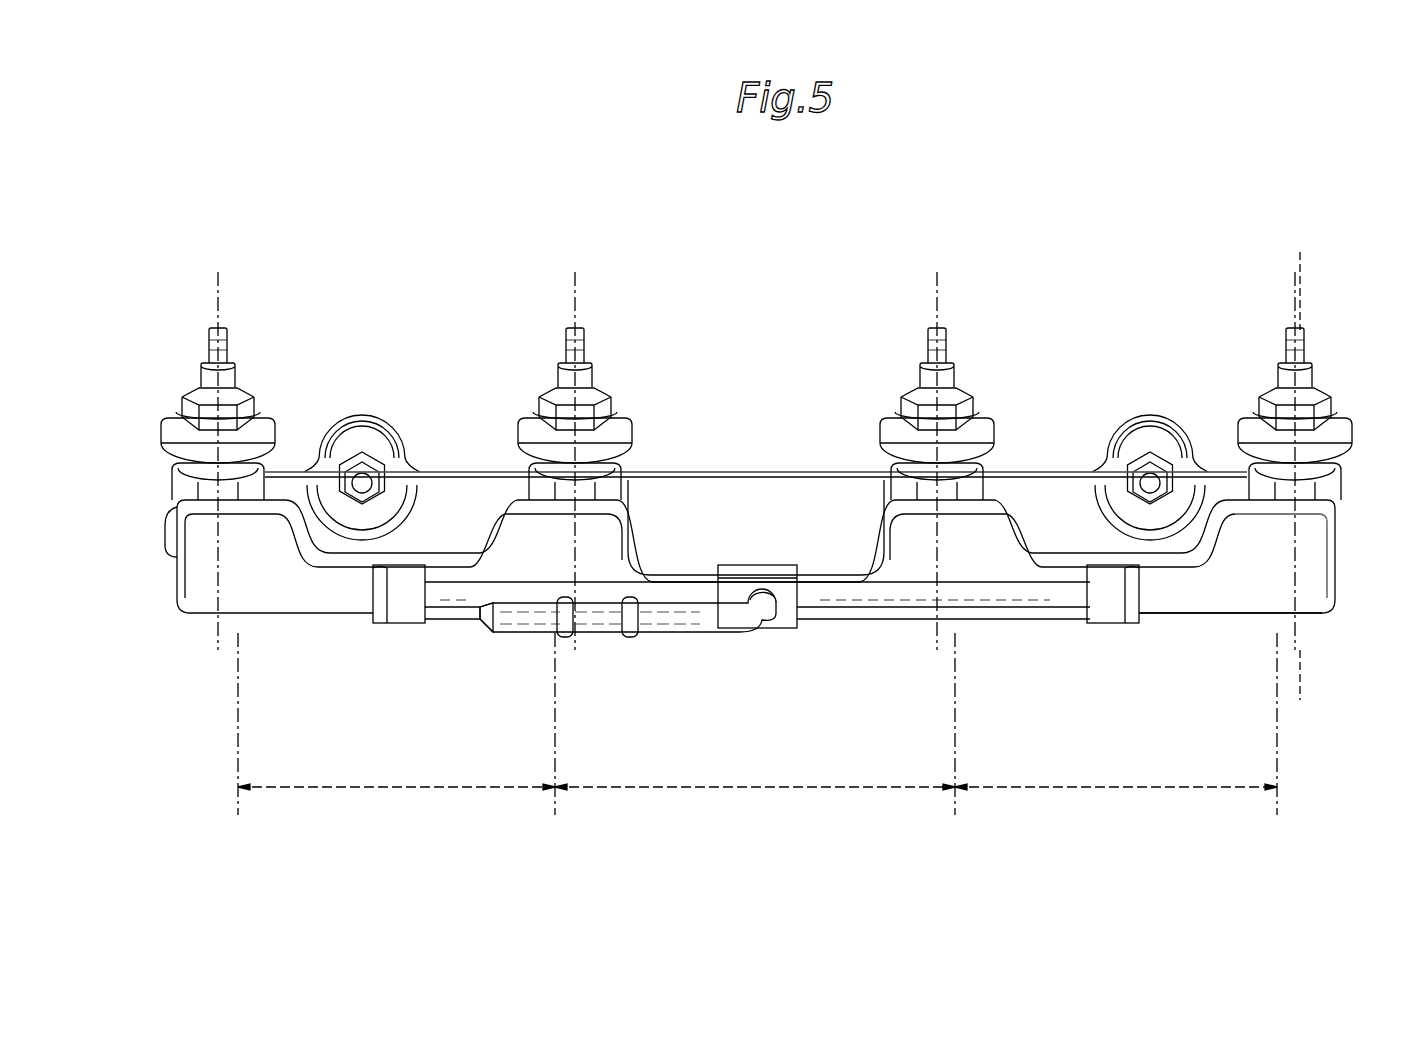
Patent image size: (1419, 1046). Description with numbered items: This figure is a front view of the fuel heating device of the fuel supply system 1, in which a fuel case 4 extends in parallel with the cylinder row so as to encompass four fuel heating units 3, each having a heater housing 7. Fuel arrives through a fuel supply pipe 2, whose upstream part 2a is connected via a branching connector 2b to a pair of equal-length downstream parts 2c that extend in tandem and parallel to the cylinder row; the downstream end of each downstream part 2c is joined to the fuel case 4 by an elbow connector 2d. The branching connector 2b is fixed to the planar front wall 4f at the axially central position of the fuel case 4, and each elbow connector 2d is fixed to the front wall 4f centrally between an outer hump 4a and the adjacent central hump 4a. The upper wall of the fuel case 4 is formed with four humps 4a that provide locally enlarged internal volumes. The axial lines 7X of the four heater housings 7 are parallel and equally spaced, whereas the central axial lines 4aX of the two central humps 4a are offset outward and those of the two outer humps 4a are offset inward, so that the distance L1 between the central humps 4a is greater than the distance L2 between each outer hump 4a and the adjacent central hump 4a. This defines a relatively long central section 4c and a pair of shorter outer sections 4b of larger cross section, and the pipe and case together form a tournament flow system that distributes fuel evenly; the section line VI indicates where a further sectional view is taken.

The fuel supply system 1 is at (1108, 240).
The fuel supply pipe 2 is at (693, 640).
The upstream part 2a is at (608, 632).
The branching connector 2b is at (767, 630).
The downstream part 2c is at (462, 621).
The elbow connector 2d is at (403, 627).
The fuel heating unit 3 is at (160, 548).
The fuel case 4 is at (292, 616).
The hump 4a is at (177, 503).
The central axial line of hump 4aX is at (238, 688).
The outer section 4b is at (337, 603).
The central section 4c is at (823, 617).
The front wall 4f is at (1217, 585).
The heater housing 7 is at (262, 487).
The axial line of heater housing 7X is at (220, 292).
The section line VI is at (1312, 262).
The distance between axial lines of central humps L1 is at (755, 776).
The distance between axial lines of outer and adjacent central humps L2 is at (757, 776).